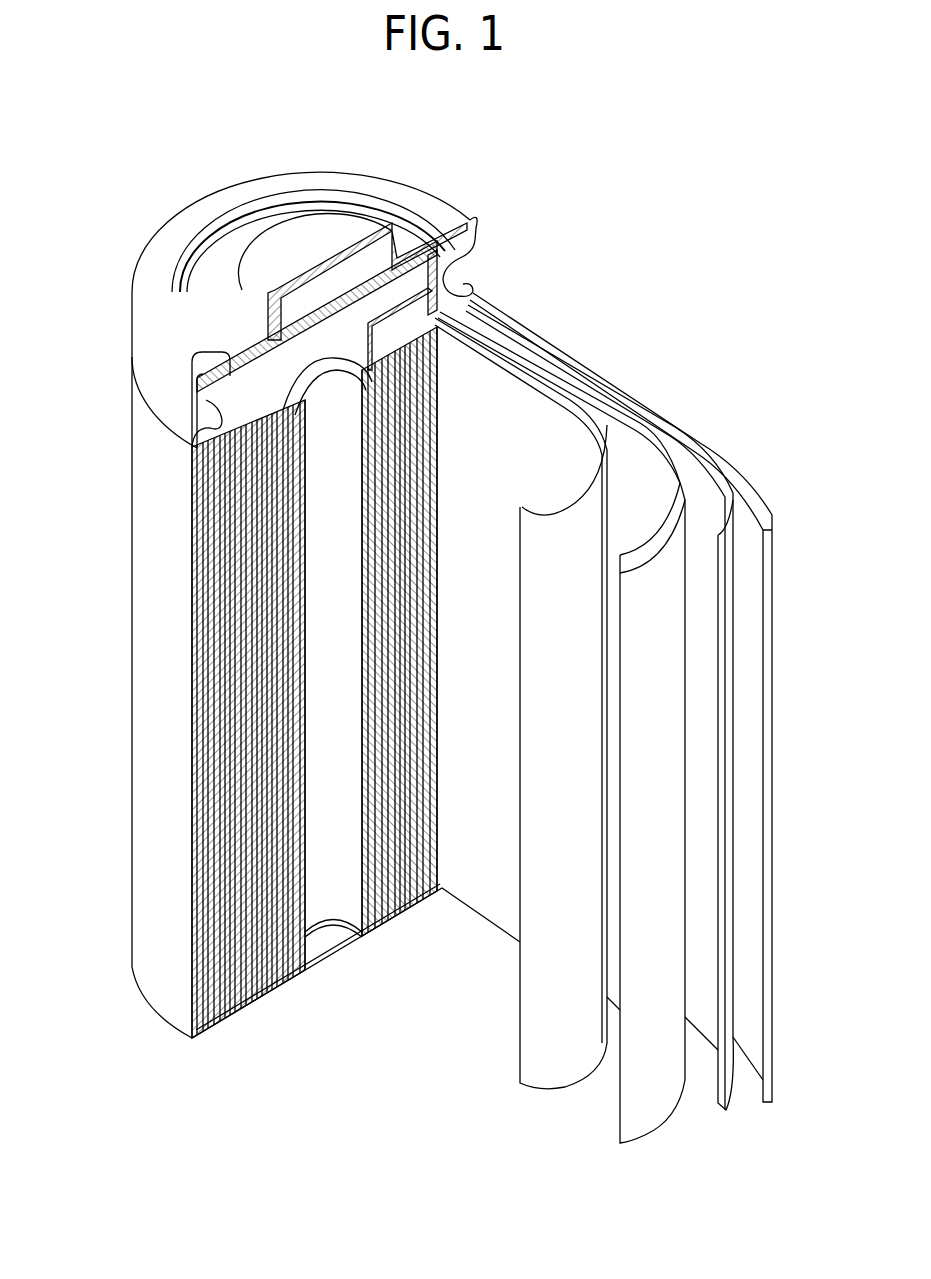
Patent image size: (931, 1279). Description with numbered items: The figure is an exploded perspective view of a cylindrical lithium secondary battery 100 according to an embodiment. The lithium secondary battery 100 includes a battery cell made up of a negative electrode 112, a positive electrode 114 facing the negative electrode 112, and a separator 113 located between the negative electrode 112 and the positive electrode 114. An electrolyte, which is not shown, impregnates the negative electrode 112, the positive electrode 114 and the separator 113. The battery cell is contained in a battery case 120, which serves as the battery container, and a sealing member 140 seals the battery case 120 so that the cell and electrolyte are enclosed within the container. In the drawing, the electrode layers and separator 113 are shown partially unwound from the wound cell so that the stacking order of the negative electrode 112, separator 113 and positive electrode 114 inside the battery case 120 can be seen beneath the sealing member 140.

The lithium secondary battery 100 is at (420, 168).
The negative electrode 112 is at (753, 478).
The separator 113 is at (502, 378).
The positive electrode 114 is at (600, 416).
The battery case 120 is at (148, 703).
The sealing member 140 is at (307, 233).